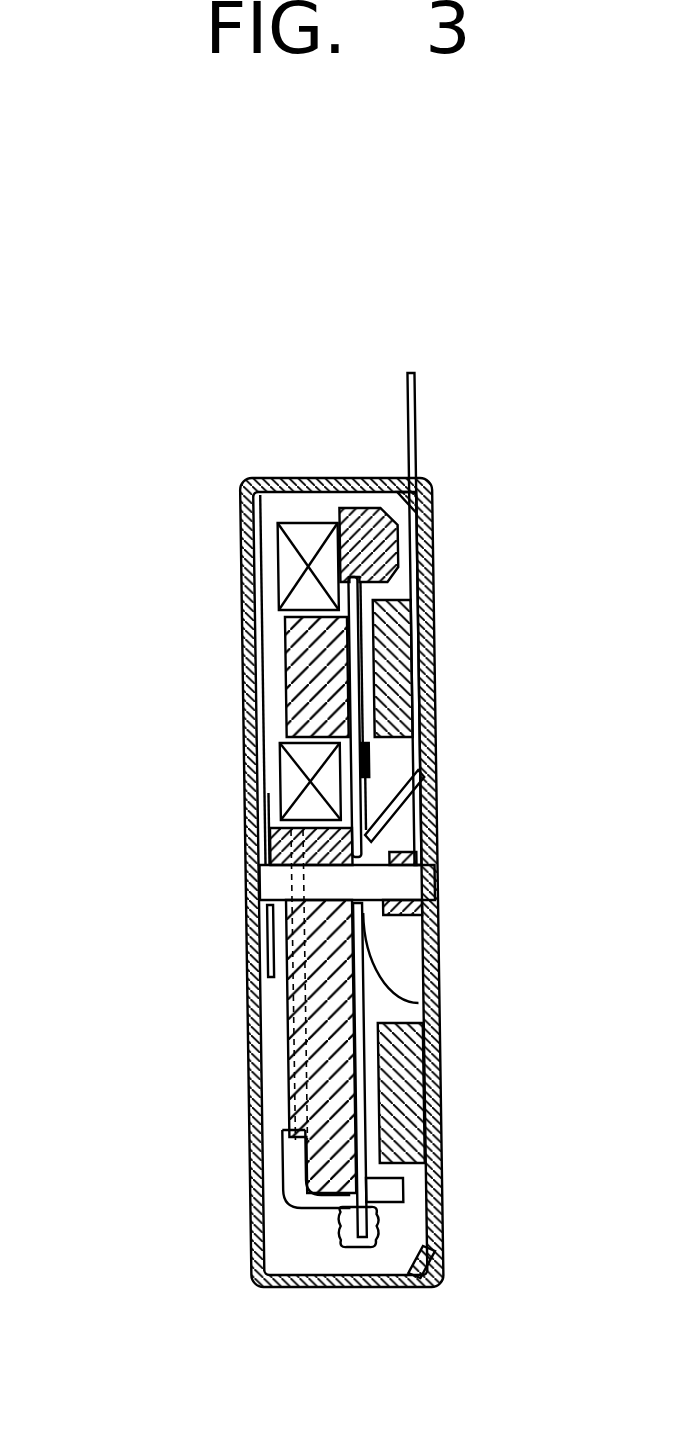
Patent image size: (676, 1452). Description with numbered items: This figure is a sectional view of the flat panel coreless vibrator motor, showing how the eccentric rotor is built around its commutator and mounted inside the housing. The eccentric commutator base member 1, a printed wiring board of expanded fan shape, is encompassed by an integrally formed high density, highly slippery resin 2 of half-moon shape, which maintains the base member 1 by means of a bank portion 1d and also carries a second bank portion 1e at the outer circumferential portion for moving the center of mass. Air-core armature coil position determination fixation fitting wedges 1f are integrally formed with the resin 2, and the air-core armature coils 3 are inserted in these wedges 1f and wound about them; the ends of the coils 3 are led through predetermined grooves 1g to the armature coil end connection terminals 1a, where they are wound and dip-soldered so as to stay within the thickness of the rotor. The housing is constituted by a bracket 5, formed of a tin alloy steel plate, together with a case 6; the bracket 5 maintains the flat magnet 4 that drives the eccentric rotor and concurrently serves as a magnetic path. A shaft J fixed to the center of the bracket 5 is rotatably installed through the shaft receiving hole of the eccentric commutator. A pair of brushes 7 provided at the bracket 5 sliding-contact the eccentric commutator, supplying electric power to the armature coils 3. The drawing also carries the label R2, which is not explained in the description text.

The eccentric commutator base member 1 is at (280, 630).
The armature coil end connection terminals 1a is at (370, 1236).
The bank portion 1d is at (405, 998).
The second bank portion 1e is at (385, 548).
The air-core armature coil position determination fixation fitting wedges 1f is at (297, 682).
The grooves 1g is at (283, 1195).
The high density, highly slippery resin 2 is at (300, 1060).
The air-core armature coils 3 is at (293, 788).
The flat magnet 4 is at (398, 637).
The bracket 5 is at (440, 1140).
The case 6 is at (312, 478).
The brushes 7 is at (396, 795).
The shaft J is at (408, 883).
The region R2 is at (142, 1127).